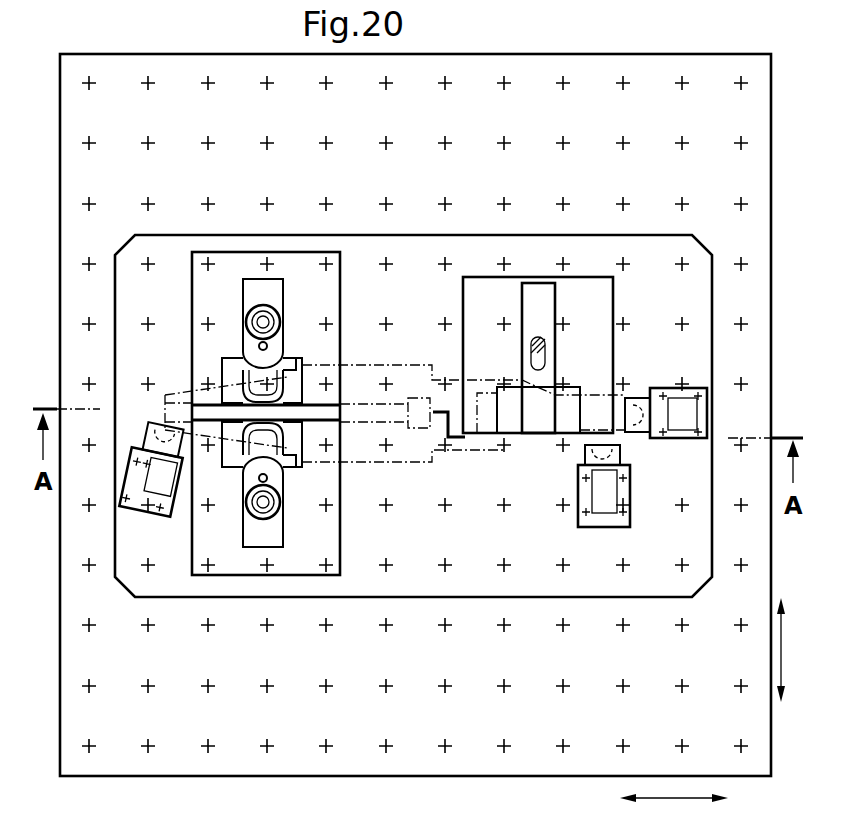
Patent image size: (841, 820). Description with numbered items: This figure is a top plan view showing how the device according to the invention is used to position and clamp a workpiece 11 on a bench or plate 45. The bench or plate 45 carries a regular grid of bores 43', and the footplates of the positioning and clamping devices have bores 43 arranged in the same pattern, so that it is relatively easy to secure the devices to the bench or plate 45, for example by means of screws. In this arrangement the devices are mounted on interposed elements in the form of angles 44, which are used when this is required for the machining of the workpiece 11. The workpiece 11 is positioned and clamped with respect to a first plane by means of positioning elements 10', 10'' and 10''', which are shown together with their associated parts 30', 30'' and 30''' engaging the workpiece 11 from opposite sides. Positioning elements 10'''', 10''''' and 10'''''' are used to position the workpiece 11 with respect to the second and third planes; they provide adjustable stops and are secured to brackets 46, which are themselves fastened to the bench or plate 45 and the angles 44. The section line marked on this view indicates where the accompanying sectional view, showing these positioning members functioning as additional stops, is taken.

The bores 43' is at (415, 387).
The bores 43 is at (409, 441).
The angles 44 is at (705, 268).
The bench or plate 45 is at (761, 368).
The brackets 46 is at (686, 405).
The positioning element 10' is at (244, 340).
The clamping bracket 30' is at (280, 359).
The positioning element 10'' is at (296, 485).
The clamping bracket 30'' is at (249, 464).
The workpiece 11 is at (388, 452).
The clamping bar 30''' is at (571, 358).
The positioning element 10''' is at (528, 441).
The positioning element 10'''' is at (675, 437).
The positioning element 10''''' is at (646, 480).
The positioning element 10'''''' is at (158, 417).